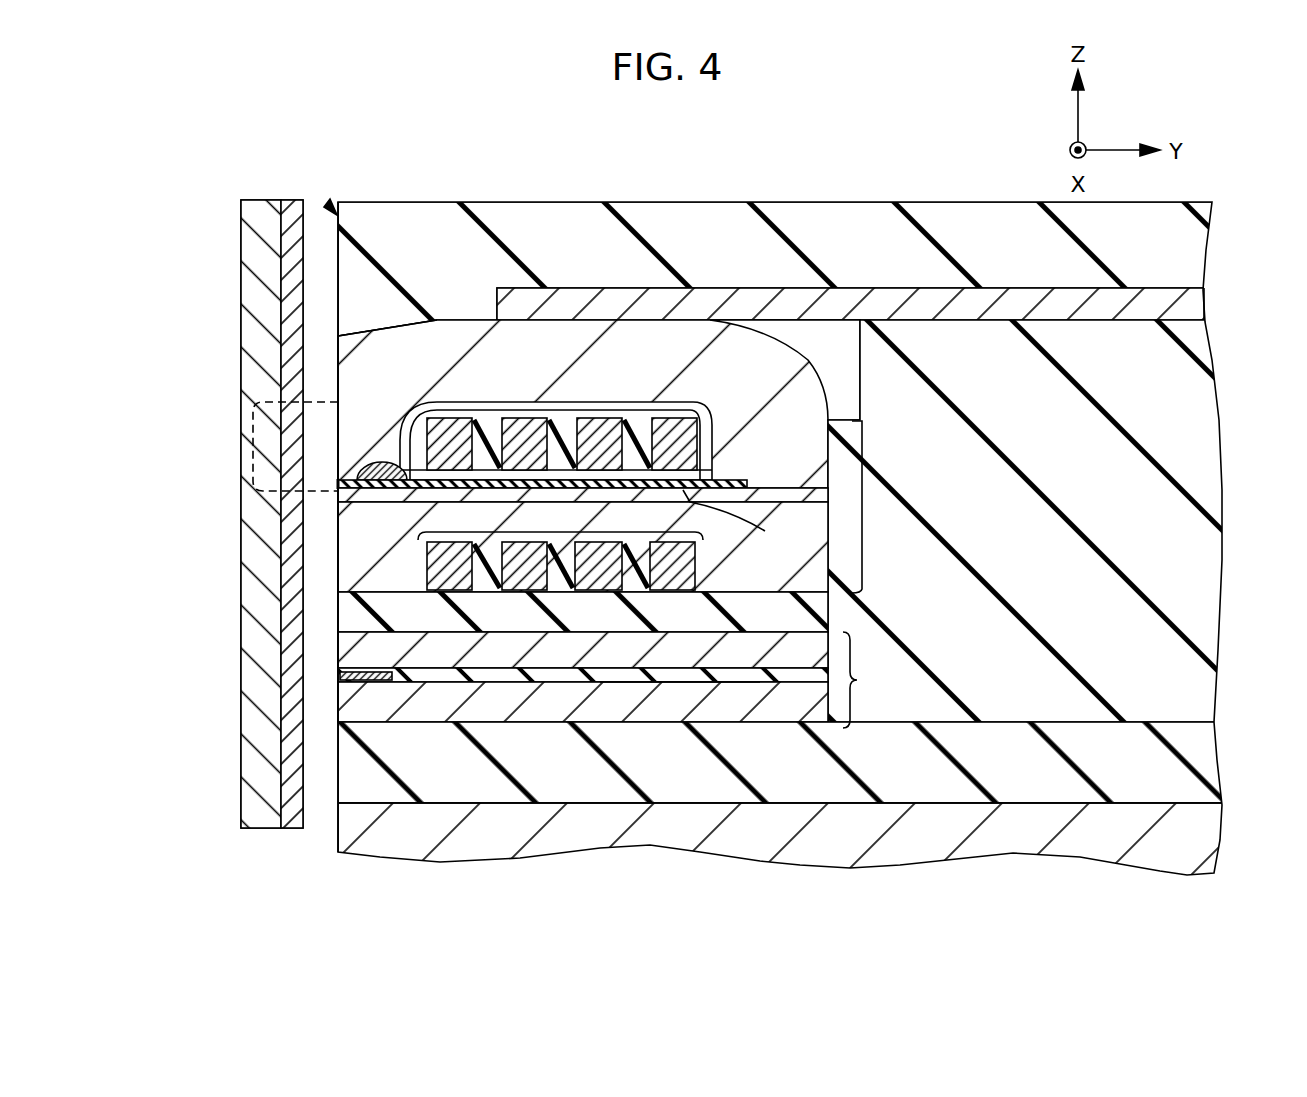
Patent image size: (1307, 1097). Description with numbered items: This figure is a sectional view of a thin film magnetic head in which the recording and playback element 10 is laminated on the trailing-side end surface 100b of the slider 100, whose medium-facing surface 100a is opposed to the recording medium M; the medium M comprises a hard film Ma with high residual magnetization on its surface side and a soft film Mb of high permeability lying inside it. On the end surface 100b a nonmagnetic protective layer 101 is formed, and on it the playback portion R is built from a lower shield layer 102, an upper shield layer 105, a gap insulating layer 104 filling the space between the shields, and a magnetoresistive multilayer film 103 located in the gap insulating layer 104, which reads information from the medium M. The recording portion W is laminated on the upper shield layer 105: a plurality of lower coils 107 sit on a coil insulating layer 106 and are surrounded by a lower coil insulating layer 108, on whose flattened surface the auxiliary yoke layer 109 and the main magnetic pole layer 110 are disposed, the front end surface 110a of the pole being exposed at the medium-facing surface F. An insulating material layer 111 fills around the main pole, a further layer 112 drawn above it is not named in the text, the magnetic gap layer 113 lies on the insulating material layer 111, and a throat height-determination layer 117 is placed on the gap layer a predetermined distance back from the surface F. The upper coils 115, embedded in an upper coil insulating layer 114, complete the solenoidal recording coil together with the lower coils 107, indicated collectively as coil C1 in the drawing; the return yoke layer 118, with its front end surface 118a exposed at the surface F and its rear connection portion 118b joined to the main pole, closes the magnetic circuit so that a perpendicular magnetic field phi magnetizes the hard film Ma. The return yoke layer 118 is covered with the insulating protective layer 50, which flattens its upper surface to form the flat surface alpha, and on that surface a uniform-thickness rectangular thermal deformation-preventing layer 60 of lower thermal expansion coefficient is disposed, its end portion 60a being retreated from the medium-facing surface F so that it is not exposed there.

The recording and playback element 10 is at (394, 138).
The insulating protective layer 50 is at (1003, 540).
The thermal deformation-preventing layer 60 is at (930, 297).
The end portion of thermal deformation-preventing layer 60a is at (512, 300).
The slider 100 is at (805, 855).
The medium-facing surface of slider 100a is at (332, 815).
The trailing-side end surface of slider 100b is at (905, 806).
The protective layer 101 is at (355, 767).
The lower shield layer 102 is at (347, 702).
The multilayer film 103 is at (345, 676).
The gap insulating layer 104 is at (681, 678).
The upper shield layer 105 is at (348, 650).
The coil insulating layer 106 is at (347, 615).
The lower coil 107 is at (563, 525).
The lower coil insulating layer 108 is at (480, 571).
The auxiliary yoke layer 109 is at (372, 576).
The main magnetic pole layer 110 is at (338, 490).
The front end surface of main magnetic pole layer 110a is at (340, 484).
The insulating material layer 111 is at (350, 478).
The insulating layer 112 is at (710, 468).
The magnetic gap layer 113 is at (460, 408).
The upper coil insulating layer 114 is at (643, 430).
The upper coil 115 is at (553, 416).
The throat height-determination layer 117 is at (387, 440).
The return yoke layer 118 is at (613, 350).
The front end surface of return yoke layer 118a is at (338, 340).
The connection portion 118b is at (777, 353).
The recording medium M is at (241, 840).
The hard film Ma is at (280, 825).
The soft film Mb is at (265, 792).
The medium-facing surface F is at (330, 210).
The recording portion W is at (873, 507).
The playback portion R is at (860, 680).
The coil C1 is at (673, 567).
The flat surface alpha is at (1180, 318).
The perpendicular magnetic field phi is at (285, 388).